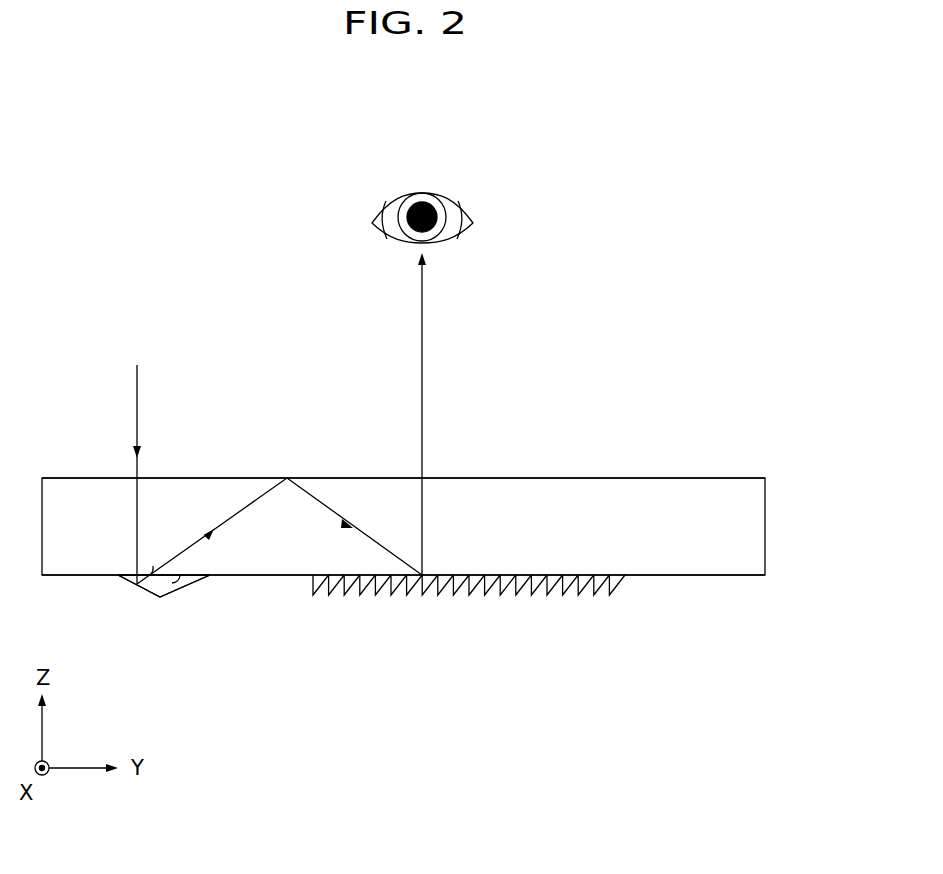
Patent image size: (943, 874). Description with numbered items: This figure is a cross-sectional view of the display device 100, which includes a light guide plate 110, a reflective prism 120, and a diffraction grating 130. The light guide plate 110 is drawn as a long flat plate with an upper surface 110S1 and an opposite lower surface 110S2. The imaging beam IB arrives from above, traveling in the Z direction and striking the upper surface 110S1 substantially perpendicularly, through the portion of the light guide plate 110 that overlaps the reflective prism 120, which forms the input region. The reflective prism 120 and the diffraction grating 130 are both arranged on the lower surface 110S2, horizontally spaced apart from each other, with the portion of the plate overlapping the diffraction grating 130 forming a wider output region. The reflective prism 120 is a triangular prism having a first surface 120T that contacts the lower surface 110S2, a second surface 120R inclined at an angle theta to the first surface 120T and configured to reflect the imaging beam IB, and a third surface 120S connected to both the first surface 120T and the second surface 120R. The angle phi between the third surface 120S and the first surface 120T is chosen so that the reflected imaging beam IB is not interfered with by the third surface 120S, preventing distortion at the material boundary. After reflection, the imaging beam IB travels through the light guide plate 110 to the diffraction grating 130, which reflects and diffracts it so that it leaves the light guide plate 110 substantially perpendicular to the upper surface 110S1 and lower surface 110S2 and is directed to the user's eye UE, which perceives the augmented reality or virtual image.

The display device 100 is at (90, 218).
The light guide plate 110 is at (767, 527).
The upper surface 110S1 is at (712, 477).
The lower surface 110S2 is at (712, 577).
The reflective prism 120 is at (160, 597).
The second surface 120R is at (130, 582).
The first surface 120T is at (167, 593).
The third surface 120S is at (205, 583).
The diffraction grating 130 is at (535, 607).
The imaging beam IB is at (135, 423).
The user's eye UE is at (468, 190).